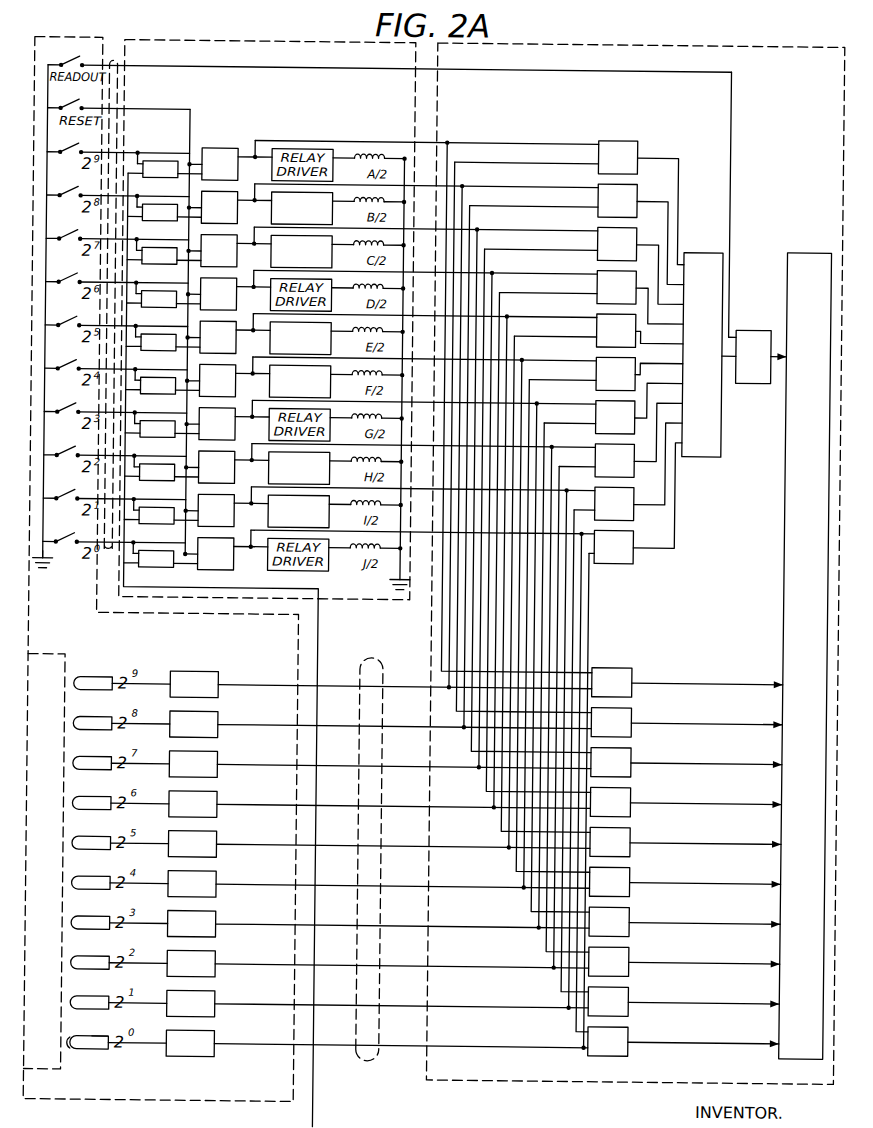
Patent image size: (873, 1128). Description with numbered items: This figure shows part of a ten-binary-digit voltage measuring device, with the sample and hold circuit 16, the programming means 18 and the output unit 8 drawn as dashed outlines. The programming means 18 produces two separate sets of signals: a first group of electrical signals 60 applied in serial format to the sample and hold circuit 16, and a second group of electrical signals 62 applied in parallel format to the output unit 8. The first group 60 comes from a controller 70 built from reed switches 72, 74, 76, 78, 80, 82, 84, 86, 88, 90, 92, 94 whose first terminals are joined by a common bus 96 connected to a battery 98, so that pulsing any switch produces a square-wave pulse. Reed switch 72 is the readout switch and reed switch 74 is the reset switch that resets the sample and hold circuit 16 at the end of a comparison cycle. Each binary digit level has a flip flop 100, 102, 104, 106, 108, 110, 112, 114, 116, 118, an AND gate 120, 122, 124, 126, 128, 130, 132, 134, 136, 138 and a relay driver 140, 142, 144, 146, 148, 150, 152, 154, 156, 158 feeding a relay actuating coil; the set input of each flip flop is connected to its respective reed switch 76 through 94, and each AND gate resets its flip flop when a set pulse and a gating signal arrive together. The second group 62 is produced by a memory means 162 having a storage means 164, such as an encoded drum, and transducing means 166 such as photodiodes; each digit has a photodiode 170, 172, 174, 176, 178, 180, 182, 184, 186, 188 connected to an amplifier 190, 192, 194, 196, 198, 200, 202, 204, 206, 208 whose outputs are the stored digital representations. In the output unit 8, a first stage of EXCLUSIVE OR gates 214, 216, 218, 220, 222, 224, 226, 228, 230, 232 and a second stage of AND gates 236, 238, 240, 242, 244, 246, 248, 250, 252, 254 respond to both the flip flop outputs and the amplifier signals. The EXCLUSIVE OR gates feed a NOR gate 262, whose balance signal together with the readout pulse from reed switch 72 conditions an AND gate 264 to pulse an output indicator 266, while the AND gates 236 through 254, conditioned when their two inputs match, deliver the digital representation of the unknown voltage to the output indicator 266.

The output unit 8 is at (696, 50).
The sample and hold circuit 16 is at (266, 40).
The programming means 18 is at (70, 37).
The first group of electrical signals 60 is at (103, 63).
The second group of electrical signals 62 is at (366, 1062).
The controller 70 is at (61, 590).
The readout switch 72 is at (74, 64).
The reset switch 74 is at (80, 108).
The reed switch 76 is at (76, 151).
The reed switch 78 is at (76, 194).
The reed switch 80 is at (76, 237).
The reed switch 82 is at (76, 280).
The reed switch 84 is at (76, 324).
The reed switch 86 is at (76, 367).
The reed switch 88 is at (76, 410).
The reed switch 90 is at (76, 453).
The reed switch 92 is at (76, 496).
The reed switch 94 is at (76, 539).
The common bus 96 is at (44, 69).
The battery 98 is at (54, 569).
The flip flop 100 is at (236, 175).
The flip flop 102 is at (236, 218).
The flip flop 104 is at (236, 261).
The flip flop 106 is at (236, 305).
The flip flop 108 is at (236, 348).
The flip flop 110 is at (236, 391).
The flip flop 112 is at (236, 435).
The flip flop 114 is at (236, 478).
The flip flop 116 is at (236, 521).
The flip flop 118 is at (236, 565).
The AND gate 120 is at (145, 187).
The AND gate 122 is at (145, 230).
The AND gate 124 is at (145, 273).
The AND gate 126 is at (145, 317).
The AND gate 128 is at (145, 360).
The AND gate 130 is at (145, 403).
The AND gate 132 is at (145, 447).
The AND gate 134 is at (145, 490).
The AND gate 136 is at (145, 533).
The AND gate 138 is at (145, 577).
The relay driver 140 is at (345, 167).
The relay driver 142 is at (345, 210).
The relay driver 144 is at (345, 253).
The relay driver 146 is at (345, 297).
The relay driver 148 is at (345, 340).
The relay driver 150 is at (345, 383).
The relay driver 152 is at (345, 427).
The relay driver 154 is at (345, 470).
The relay driver 156 is at (345, 513).
The relay driver 158 is at (345, 556).
The memory means 162 is at (81, 1057).
The storage means 164 is at (49, 877).
The transducing means 166 is at (113, 1056).
The photodiode 170 is at (101, 676).
The photodiode 172 is at (101, 716).
The photodiode 174 is at (101, 756).
The photodiode 176 is at (101, 796).
The photodiode 178 is at (101, 836).
The photodiode 180 is at (101, 876).
The photodiode 182 is at (101, 915).
The photodiode 184 is at (101, 955).
The photodiode 186 is at (101, 995).
The photodiode 188 is at (101, 1035).
The amplifier 190 is at (223, 685).
The amplifier 192 is at (223, 725).
The amplifier 194 is at (223, 765).
The amplifier 196 is at (223, 805).
The amplifier 198 is at (223, 845).
The amplifier 200 is at (223, 884).
The amplifier 202 is at (223, 924).
The amplifier 204 is at (223, 964).
The amplifier 206 is at (223, 1004).
The amplifier 208 is at (223, 1044).
The EXCLUSIVE OR gate 214 is at (597, 156).
The EXCLUSIVE OR gate 216 is at (597, 199).
The EXCLUSIVE OR gate 218 is at (597, 242).
The EXCLUSIVE OR gate 220 is at (597, 286).
The EXCLUSIVE OR gate 222 is at (597, 329).
The EXCLUSIVE OR gate 224 is at (597, 372).
The EXCLUSIVE OR gate 226 is at (597, 416).
The EXCLUSIVE OR gate 228 is at (597, 459).
The EXCLUSIVE OR gate 230 is at (643, 503).
The EXCLUSIVE OR gate 232 is at (643, 553).
The AND gate 236 is at (638, 673).
The AND gate 238 is at (638, 713).
The AND gate 240 is at (638, 753).
The AND gate 242 is at (638, 793).
The AND gate 244 is at (638, 833).
The AND gate 246 is at (638, 872).
The AND gate 248 is at (638, 912).
The AND gate 250 is at (638, 952).
The AND gate 252 is at (638, 992).
The AND gate 254 is at (638, 1032).
The NOR gate 262 is at (703, 257).
The AND gate 264 is at (753, 332).
The output indicator 266 is at (806, 254).